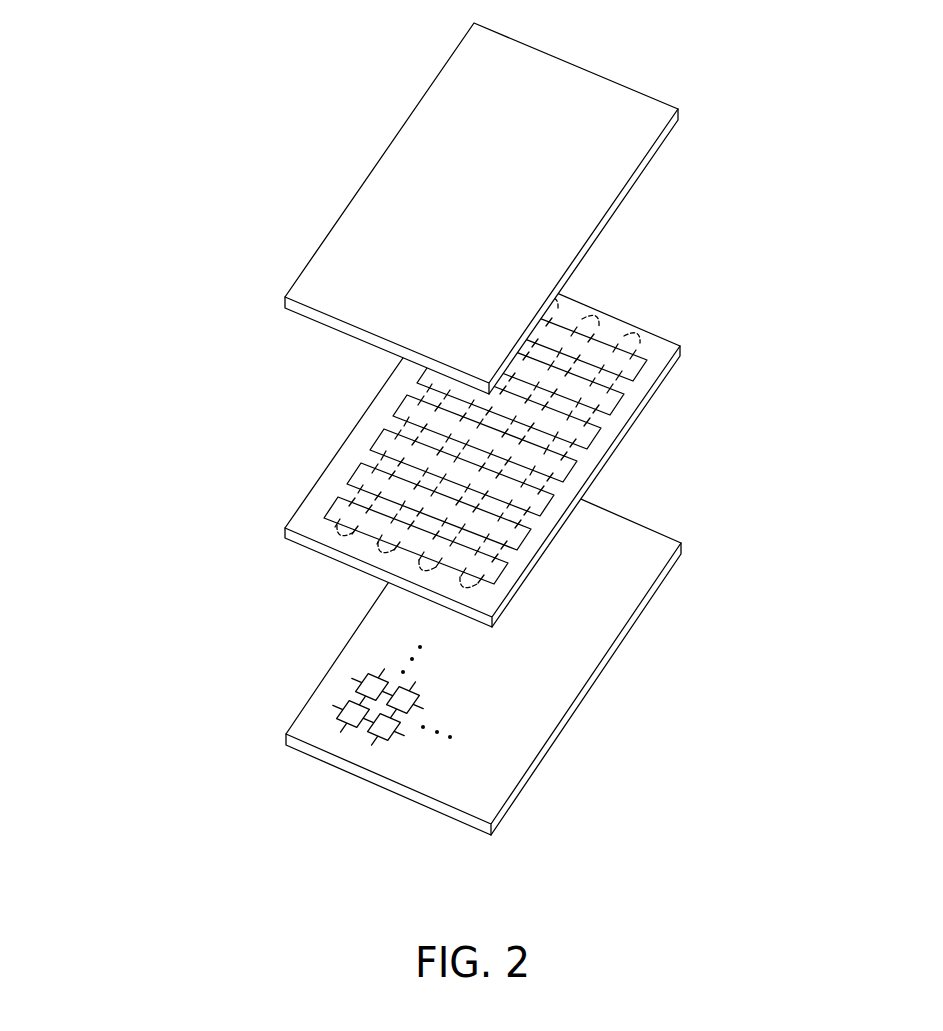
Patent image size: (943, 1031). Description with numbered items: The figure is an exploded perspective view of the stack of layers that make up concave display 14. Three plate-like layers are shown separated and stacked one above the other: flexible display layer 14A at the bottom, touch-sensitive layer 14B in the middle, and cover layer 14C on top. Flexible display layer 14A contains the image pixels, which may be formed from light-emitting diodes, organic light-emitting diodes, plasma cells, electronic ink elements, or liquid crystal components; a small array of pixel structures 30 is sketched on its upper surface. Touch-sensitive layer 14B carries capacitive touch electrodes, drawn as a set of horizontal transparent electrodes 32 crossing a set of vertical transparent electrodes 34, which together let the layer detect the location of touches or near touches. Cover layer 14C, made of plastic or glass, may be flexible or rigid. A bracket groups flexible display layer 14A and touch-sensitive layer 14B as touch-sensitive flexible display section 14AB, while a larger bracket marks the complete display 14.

The concave display 14 is at (453, 433).
The flexible display layer 14A is at (435, 648).
The touch-sensitive layer 14B is at (456, 442).
The cover layer 14C is at (284, 297).
The touch-sensitive flexible display section 14AB is at (394, 550).
The electrode pads 30 is at (378, 744).
The horizontal transparent electrodes 32 is at (640, 372).
The vertical transparent electrodes 34 is at (630, 337).